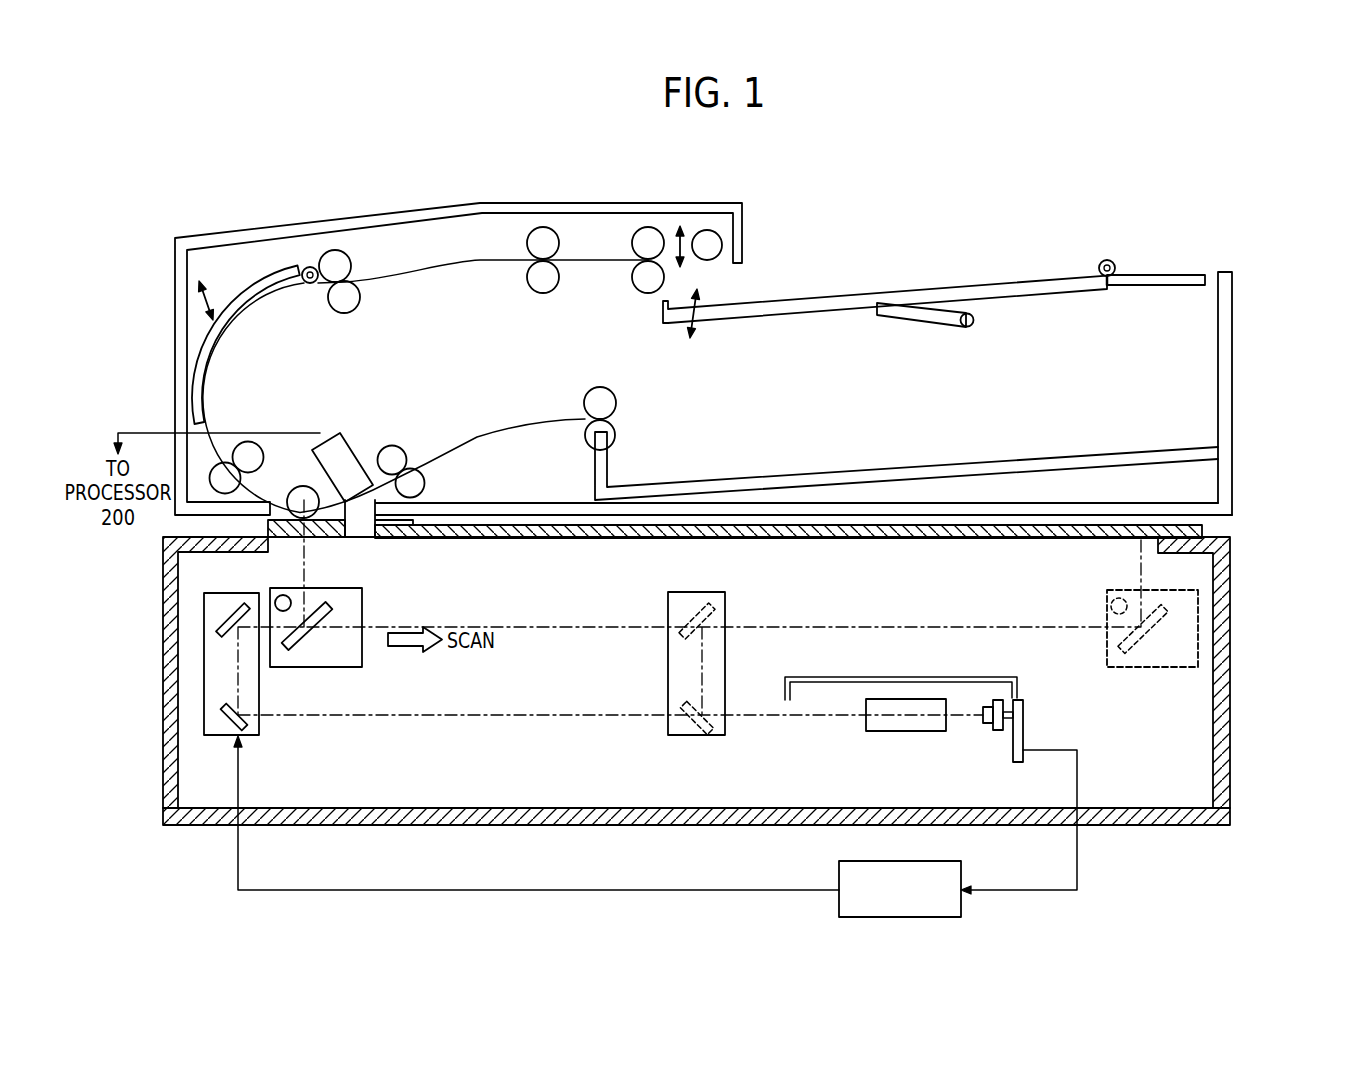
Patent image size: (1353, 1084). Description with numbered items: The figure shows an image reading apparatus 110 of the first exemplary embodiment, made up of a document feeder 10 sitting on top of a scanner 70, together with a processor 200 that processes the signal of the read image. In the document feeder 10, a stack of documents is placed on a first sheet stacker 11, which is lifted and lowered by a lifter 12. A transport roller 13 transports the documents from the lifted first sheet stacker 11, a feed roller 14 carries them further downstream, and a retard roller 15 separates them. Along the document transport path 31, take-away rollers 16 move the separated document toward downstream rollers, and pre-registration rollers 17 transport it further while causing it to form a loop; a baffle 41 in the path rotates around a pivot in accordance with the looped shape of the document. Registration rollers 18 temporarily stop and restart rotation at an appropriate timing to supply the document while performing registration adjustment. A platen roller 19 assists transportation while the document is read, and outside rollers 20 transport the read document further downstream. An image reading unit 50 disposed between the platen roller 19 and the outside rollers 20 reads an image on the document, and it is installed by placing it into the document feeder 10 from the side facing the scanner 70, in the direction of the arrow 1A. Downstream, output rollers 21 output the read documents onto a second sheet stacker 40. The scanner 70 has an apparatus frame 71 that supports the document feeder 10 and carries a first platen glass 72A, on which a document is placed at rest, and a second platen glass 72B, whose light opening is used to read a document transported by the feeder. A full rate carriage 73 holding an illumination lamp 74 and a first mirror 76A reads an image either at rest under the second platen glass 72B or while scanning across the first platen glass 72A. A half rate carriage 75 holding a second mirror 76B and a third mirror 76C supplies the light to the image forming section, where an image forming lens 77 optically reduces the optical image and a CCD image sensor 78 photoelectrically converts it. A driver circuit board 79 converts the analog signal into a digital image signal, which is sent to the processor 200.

The document feeder 10 is at (965, 200).
The image reading apparatus 110 is at (1266, 264).
The first sheet stacker 11 is at (855, 297).
The lifter 12 is at (915, 324).
The transport roller 13 is at (722, 238).
The feed roller 14 is at (645, 228).
The retard roller 15 is at (665, 277).
The take-away rollers 16 is at (518, 239).
The pre-registration rollers 17 is at (365, 311).
The document transport path 31 is at (440, 265).
The baffle 41 is at (245, 297).
The registration rollers 18 is at (256, 428).
The platen roller 19 is at (301, 487).
The image reading unit 50 is at (346, 434).
The outside rollers 20 is at (407, 443).
The output rollers 21 is at (626, 389).
The second sheet stacker 40 is at (983, 455).
The arrow 1A is at (386, 550).
The scanner 70 is at (1152, 848).
The apparatus frame 71 is at (1110, 828).
The first platen glass 72A is at (885, 538).
The second platen glass 72B is at (323, 537).
The full rate carriage 73 is at (362, 655).
The illumination lamp 74 is at (283, 595).
The half rate carriage 75 is at (668, 603).
The first mirror 76A is at (307, 647).
The second mirror 76B is at (238, 607).
The third mirror 76C is at (225, 718).
The image forming lens 77 is at (866, 722).
The CCD image sensor 78 is at (990, 730).
The driver circuit board 79 is at (1025, 725).
The processor 200 is at (839, 868).